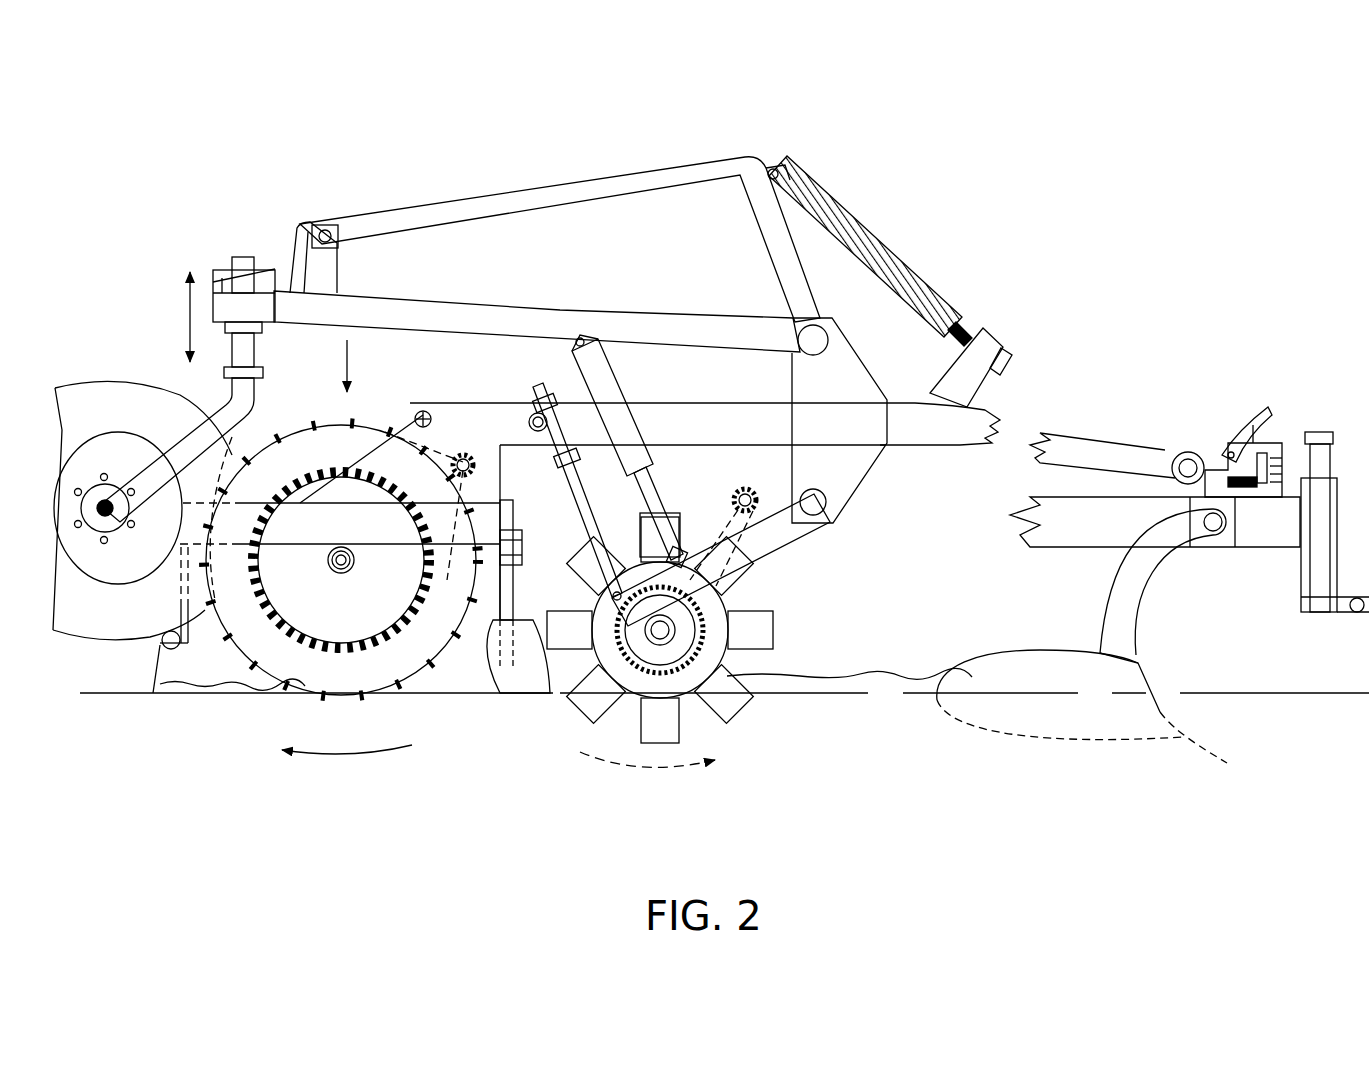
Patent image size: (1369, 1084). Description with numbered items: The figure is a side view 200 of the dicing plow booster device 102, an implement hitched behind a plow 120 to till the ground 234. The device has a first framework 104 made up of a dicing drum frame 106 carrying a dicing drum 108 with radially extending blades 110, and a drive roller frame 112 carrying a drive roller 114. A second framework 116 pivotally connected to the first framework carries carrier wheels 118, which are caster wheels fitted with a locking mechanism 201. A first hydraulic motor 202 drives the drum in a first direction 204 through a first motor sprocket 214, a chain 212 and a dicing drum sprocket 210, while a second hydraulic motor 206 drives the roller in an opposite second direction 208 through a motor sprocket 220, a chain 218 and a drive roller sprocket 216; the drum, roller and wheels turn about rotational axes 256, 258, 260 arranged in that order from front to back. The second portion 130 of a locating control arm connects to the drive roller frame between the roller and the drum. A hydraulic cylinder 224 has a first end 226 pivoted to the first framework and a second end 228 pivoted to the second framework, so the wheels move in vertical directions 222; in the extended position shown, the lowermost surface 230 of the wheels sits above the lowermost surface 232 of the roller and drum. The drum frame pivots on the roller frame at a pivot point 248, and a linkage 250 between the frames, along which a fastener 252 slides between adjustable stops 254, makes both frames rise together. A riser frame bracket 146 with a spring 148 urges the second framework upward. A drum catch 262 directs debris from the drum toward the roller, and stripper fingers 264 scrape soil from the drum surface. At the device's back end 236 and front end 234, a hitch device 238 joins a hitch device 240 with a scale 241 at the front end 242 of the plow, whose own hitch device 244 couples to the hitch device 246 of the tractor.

The dicing plow booster device 102 is at (493, 812).
The first framework 104 is at (838, 380).
The dicing drum frame 106 is at (770, 537).
The dicing drum 108 is at (717, 647).
The blades 110 is at (757, 627).
The drive roller frame 112 is at (432, 410).
The drive roller 114 is at (273, 655).
The second framework 116 is at (478, 302).
The carrier wheels 118 is at (95, 392).
The plow 120 is at (1078, 792).
The second portion of locating control arm 130 is at (560, 508).
The riser frame bracket 146 is at (697, 160).
The spring 148 is at (858, 236).
The side view 200 is at (993, 243).
The locking mechanism 201 is at (217, 251).
The first hydraulic motor 202 is at (745, 488).
The first direction 204 is at (655, 768).
The second hydraulic motor 206 is at (472, 412).
The second direction 208 is at (412, 745).
The dicing drum sprocket 210 is at (725, 690).
The chain 212 is at (697, 537).
The first motor sprocket 214 is at (746, 488).
The drive roller sprocket 216 is at (390, 645).
The chain 218 is at (395, 440).
The motor sprocket 220 is at (478, 468).
The vertical directions 222 is at (188, 312).
The hydraulic cylinder 224 is at (617, 392).
The first end of hydraulic cylinder 226 is at (645, 560).
The second end of hydraulic cylinder 228 is at (581, 338).
The lowermost surface of carrier wheels 230 is at (107, 648).
The lowermost surface of drive roller or dicing drum 232 is at (354, 707).
The ground 234 is at (864, 683).
The back end 236 is at (79, 216).
The hitch device 238 is at (1218, 445).
The hitch device of plow 240 is at (1243, 440).
The scale 241 is at (1264, 501).
The front end of plow 242 is at (1258, 570).
The hitch device 244 is at (1309, 423).
The hitch device of tractor 246 is at (1319, 622).
The pivot point 248 is at (826, 502).
The linkage 250 is at (600, 495).
The fastener 252 is at (534, 424).
The adjustable stops 254 is at (556, 412).
The rotational axis of dicing drum 256 is at (650, 642).
The rotational axis of drive roller 258 is at (346, 683).
The rotational axis of carrier wheels 260 is at (108, 514).
The drum catch 262 is at (530, 693).
The stripper fingers 264 is at (735, 606).